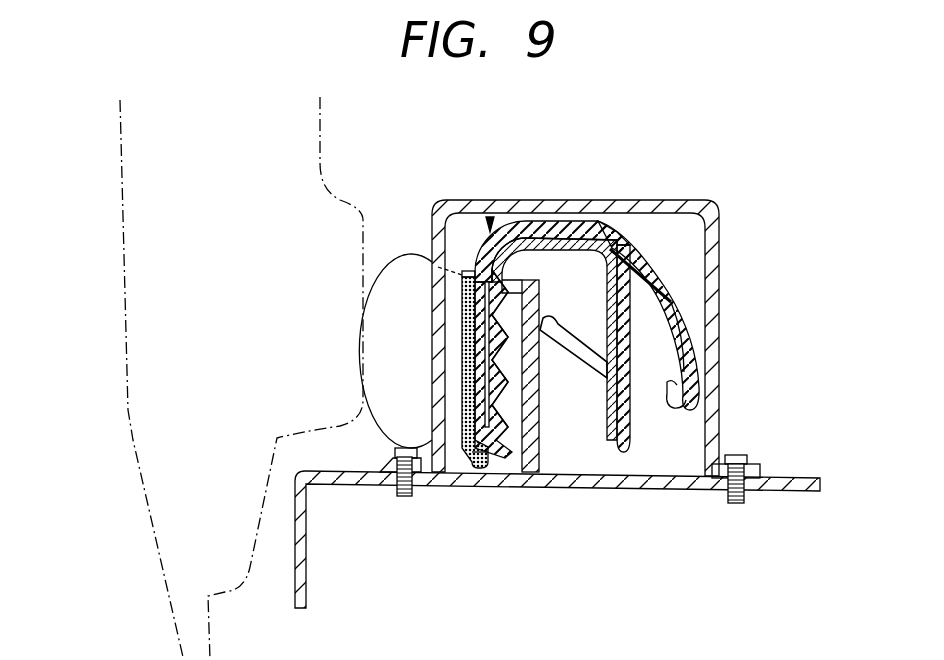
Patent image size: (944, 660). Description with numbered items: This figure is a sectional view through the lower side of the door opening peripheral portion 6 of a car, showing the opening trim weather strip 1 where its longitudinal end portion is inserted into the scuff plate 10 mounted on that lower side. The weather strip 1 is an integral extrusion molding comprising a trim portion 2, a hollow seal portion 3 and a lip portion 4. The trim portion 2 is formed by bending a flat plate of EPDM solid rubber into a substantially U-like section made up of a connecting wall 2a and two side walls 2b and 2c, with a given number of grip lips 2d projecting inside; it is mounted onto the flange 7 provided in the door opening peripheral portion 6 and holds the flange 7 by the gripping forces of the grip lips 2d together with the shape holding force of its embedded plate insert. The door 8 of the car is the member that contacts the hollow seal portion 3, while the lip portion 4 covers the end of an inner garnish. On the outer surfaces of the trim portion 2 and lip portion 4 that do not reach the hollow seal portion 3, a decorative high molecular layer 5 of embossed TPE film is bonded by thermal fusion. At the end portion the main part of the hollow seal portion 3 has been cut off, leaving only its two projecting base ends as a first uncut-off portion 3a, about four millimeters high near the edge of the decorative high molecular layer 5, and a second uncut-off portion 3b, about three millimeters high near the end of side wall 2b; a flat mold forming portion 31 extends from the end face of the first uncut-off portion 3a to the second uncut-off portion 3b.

The opening trim weather strip 1 is at (488, 200).
The trim portion 2 is at (537, 234).
The connecting wall 2a is at (573, 225).
The side wall 2b is at (478, 349).
The side wall 2c is at (640, 430).
The grip lips 2d is at (519, 433).
The hollow seal portion 3 is at (353, 343).
The first uncut-off portion 3a is at (464, 287).
The second uncut-off portion 3b is at (470, 462).
The mold forming portion 31 is at (462, 369).
The lip portion 4 is at (690, 368).
The decorative high molecular layer 5 is at (663, 264).
The door opening peripheral portion 6 is at (318, 466).
The flange 7 is at (540, 420).
The door 8 is at (128, 415).
The scuff plate 10 is at (650, 206).